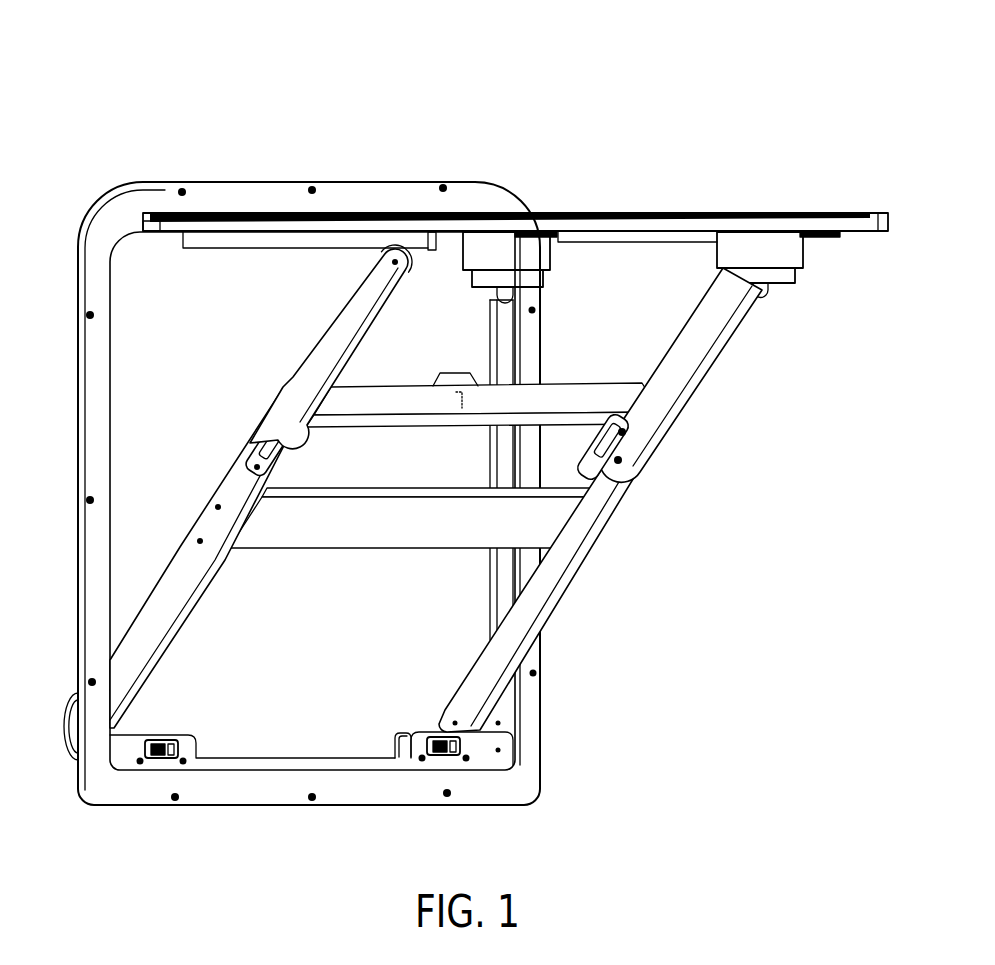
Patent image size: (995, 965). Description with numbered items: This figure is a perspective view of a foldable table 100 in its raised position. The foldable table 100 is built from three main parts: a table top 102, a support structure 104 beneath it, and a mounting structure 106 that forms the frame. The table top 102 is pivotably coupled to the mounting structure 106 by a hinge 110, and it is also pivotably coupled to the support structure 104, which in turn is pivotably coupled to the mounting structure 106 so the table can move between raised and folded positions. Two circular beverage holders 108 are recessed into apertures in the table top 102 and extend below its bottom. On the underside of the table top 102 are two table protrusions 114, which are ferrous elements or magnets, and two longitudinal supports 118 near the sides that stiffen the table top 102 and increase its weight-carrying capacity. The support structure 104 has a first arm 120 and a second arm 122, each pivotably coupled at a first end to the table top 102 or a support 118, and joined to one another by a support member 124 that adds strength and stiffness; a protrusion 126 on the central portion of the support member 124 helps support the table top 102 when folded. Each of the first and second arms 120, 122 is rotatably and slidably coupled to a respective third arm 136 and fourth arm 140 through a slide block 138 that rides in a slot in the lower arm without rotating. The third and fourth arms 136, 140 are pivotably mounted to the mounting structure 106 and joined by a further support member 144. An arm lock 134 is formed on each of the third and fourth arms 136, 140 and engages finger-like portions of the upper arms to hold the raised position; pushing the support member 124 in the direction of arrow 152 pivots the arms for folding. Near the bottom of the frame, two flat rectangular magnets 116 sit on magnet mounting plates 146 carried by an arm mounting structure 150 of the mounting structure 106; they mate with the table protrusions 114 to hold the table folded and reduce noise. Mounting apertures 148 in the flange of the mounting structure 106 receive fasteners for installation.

The foldable table 100 is at (212, 88).
The table top 102 is at (622, 228).
The support structure 104 is at (752, 481).
The mounting structure 106 is at (108, 212).
The beverage holder 108 is at (500, 255).
The hinge 110 is at (228, 213).
The table protrusion 114 is at (838, 232).
The magnet 116 is at (166, 760).
The support 118 is at (262, 243).
The first arm 120 is at (698, 333).
The second arm 122 is at (345, 342).
The support member 124 is at (582, 395).
The protrusion 126 is at (455, 372).
The arm lock 134 is at (617, 431).
The third arm 136 is at (560, 568).
The slide block 138 is at (256, 466).
The fourth arm 140 is at (163, 614).
The support member 144 is at (388, 535).
The magnet mounting plate 146 is at (396, 745).
The mounting aperture 148 is at (85, 312).
The arm mounting structure 150 is at (322, 765).
The arrow 152 is at (452, 395).